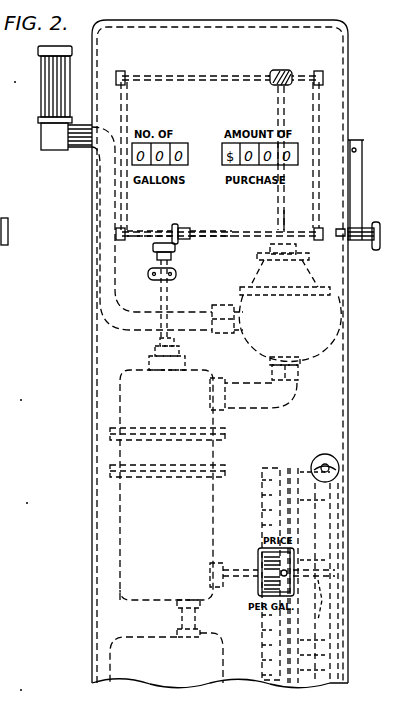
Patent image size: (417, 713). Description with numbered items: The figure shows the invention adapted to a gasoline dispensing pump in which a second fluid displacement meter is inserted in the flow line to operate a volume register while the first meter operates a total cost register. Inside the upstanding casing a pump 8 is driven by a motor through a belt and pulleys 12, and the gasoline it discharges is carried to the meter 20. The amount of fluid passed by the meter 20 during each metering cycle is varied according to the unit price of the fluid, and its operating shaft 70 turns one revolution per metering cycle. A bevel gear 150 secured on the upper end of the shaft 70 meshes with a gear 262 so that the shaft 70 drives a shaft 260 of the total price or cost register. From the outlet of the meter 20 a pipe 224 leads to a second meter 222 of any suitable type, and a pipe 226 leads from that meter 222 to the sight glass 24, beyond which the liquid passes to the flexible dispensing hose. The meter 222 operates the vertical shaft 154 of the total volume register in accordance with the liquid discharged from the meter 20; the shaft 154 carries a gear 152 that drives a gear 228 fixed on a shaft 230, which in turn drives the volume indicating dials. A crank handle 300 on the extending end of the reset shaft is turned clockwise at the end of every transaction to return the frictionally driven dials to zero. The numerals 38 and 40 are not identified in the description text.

The shaft 230 is at (152, 70).
The gear 152 is at (268, 74).
The gear 228 is at (288, 70).
The vertical shaft 154 is at (284, 216).
The sight glass 24 is at (45, 110).
The pump 8 is at (9, 87).
The pipe 226 is at (115, 322).
The gear 262 is at (173, 224).
The shaft 260 is at (198, 228).
The bevel gear 150 is at (150, 249).
The meter shaft 70 is at (174, 296).
The meter 222 is at (255, 270).
The pipe 224 is at (263, 398).
The meter 20 is at (130, 550).
The crank handle 300 is at (376, 126).
The support 38 is at (12, 405).
The support 40 is at (2, 505).
The pulleys 12 is at (12, 695).